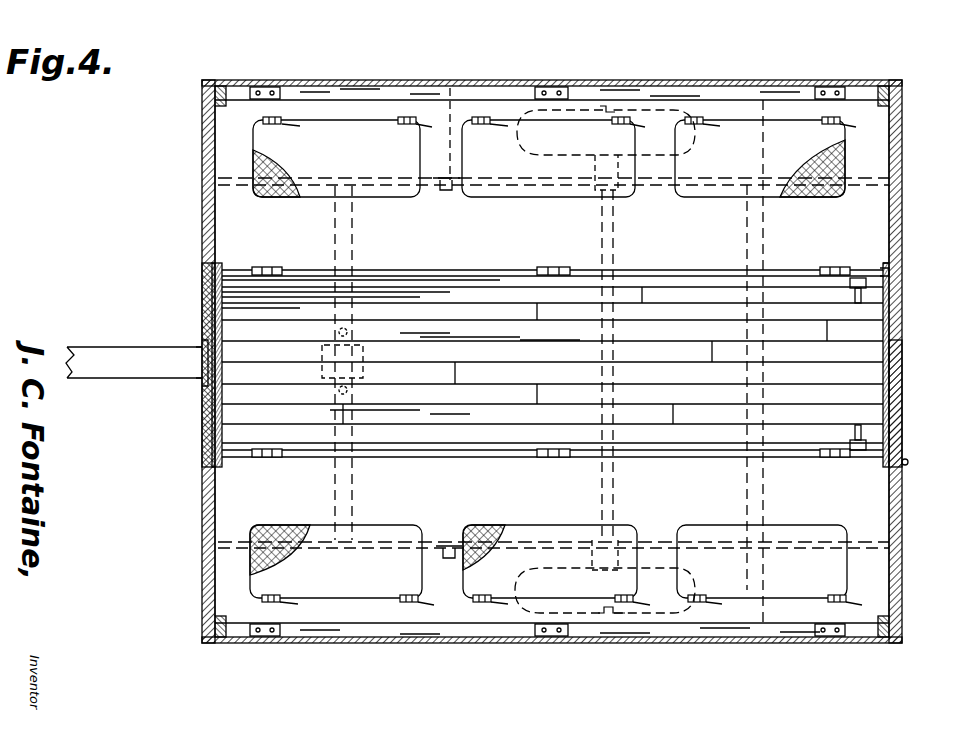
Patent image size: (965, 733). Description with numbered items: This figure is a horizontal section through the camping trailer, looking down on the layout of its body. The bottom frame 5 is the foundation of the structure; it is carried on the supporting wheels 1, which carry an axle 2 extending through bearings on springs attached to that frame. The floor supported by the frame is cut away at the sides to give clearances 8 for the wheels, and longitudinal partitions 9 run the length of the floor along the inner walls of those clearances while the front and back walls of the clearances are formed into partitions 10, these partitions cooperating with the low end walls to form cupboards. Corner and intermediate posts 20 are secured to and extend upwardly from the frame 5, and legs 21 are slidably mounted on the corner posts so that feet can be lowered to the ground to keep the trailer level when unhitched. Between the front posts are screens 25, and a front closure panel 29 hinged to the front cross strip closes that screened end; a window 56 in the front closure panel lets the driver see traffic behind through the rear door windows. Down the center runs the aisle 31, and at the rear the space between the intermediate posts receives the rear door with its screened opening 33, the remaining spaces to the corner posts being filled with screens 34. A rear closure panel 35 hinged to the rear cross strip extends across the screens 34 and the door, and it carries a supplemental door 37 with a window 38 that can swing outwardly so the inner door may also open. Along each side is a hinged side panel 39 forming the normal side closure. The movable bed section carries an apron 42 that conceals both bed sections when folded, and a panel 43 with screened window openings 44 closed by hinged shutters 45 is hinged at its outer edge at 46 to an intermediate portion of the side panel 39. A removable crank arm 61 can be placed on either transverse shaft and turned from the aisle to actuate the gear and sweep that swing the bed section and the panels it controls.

The supporting wheels 1 is at (566, 150).
The axle 2 is at (602, 228).
The bottom frame 5 is at (102, 370).
The clearances 8 is at (470, 88).
The longitudinal partitions 9 is at (440, 190).
The partitions 10 is at (418, 165).
The corner and intermediate posts 20 is at (218, 80).
The legs 21 is at (224, 106).
The screens 25 is at (215, 206).
The front closure panel 29 is at (195, 300).
The aisle 31 is at (552, 363).
The screened opening 33 is at (902, 402).
The screens 34 is at (889, 210).
The closure panel 35 is at (902, 188).
The supplemental door 37 is at (905, 278).
The window 38 is at (902, 316).
The side panel 39 is at (628, 80).
The apron 42 is at (437, 275).
The panel 43 is at (703, 361).
The screened window openings 44 is at (280, 172).
The hinged shutters 45 is at (782, 532).
The hinge connection 46 is at (270, 87).
The window 56 is at (202, 383).
The removable crank arm 61 is at (855, 295).